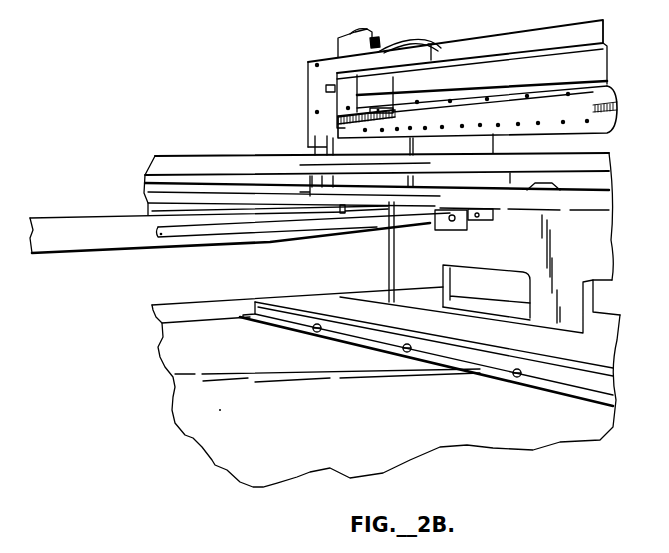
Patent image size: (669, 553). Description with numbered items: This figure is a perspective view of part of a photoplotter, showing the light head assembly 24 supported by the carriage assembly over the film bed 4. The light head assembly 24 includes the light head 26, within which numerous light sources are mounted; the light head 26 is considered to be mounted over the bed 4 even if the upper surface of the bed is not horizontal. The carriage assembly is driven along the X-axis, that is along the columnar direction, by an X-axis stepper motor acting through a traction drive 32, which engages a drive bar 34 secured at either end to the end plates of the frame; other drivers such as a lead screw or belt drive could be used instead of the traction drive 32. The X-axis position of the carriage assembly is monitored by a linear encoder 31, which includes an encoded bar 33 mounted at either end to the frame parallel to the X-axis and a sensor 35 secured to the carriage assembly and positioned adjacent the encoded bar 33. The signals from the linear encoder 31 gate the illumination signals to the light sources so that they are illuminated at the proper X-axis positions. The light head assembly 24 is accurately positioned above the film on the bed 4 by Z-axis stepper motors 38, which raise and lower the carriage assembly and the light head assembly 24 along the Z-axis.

The film bed 4 is at (299, 161).
The light head assembly 24 is at (483, 108).
The light head 26 is at (387, 133).
The linear encoder 31 is at (308, 243).
The traction drive 32 is at (466, 231).
The encoded bar 33 is at (111, 238).
The drive bar 34 is at (213, 226).
The sensor 35 is at (328, 212).
The Z-axis stepper motors 38 is at (346, 38).